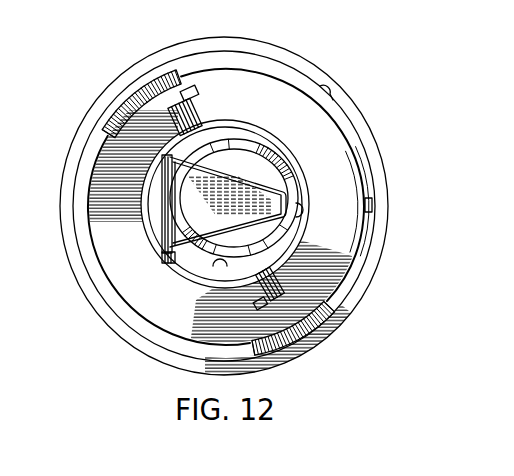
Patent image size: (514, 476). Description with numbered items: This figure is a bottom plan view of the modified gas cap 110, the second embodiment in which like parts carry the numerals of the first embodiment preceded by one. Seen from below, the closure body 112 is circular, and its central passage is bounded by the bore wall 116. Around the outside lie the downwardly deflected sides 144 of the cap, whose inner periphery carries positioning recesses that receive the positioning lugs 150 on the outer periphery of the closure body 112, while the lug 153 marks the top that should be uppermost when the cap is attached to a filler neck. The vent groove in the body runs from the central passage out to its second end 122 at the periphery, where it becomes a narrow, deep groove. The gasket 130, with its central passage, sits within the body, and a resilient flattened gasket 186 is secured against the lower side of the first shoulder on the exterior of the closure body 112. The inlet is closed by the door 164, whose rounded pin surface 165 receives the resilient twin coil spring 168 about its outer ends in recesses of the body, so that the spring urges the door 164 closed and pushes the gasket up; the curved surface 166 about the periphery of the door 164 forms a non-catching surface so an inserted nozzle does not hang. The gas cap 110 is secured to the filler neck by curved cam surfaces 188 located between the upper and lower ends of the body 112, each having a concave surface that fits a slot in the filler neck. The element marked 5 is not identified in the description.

The partial numeral 5 is at (5, 219).
The gas cap 110 is at (109, 78).
The closure body 112 is at (315, 158).
The bore wall 116 is at (296, 214).
The second end of vent groove 122 is at (374, 203).
The gasket 130 is at (254, 134).
The downwardly deflected sides of cap 144 is at (351, 104).
The positioning lugs 150 is at (326, 85).
The lug 153 is at (70, 212).
The door 164 is at (273, 234).
The rounded pin surface 165 is at (157, 229).
The curved surface 166 is at (213, 264).
The twin coil spring 168 is at (170, 262).
The flattened gasket 186 is at (127, 268).
The curved cam surfaces 188 is at (182, 103).